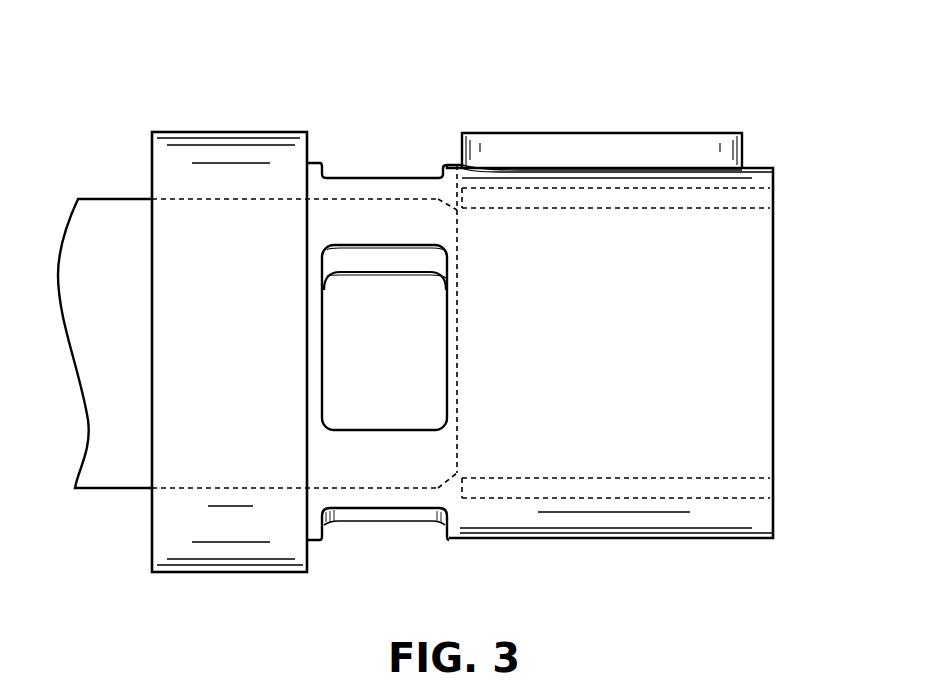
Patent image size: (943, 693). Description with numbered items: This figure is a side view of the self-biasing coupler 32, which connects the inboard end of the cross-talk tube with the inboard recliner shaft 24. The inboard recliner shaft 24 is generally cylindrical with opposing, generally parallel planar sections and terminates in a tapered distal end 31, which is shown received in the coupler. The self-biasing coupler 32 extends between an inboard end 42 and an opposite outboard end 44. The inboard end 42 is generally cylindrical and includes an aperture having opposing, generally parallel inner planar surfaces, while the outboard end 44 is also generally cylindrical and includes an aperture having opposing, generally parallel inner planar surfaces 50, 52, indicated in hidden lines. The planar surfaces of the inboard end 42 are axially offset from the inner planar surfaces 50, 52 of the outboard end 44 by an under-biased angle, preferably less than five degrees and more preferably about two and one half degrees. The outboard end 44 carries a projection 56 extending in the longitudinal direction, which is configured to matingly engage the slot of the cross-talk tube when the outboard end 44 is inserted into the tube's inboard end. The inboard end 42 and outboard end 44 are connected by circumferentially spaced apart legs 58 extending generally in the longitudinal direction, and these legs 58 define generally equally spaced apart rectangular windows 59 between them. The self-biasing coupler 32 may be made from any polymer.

The self-biasing coupler 32 is at (97, 93).
The inboard recliner shaft 24 is at (124, 448).
The inboard end 42 is at (224, 153).
The legs 58 is at (382, 212).
The outboard end 44 is at (733, 518).
The projection 56 is at (637, 148).
The tapered distal end 31 is at (450, 165).
The inner planar surface 50 is at (718, 208).
The inner planar surface 52 is at (705, 488).
The rectangular windows 59 is at (410, 335).